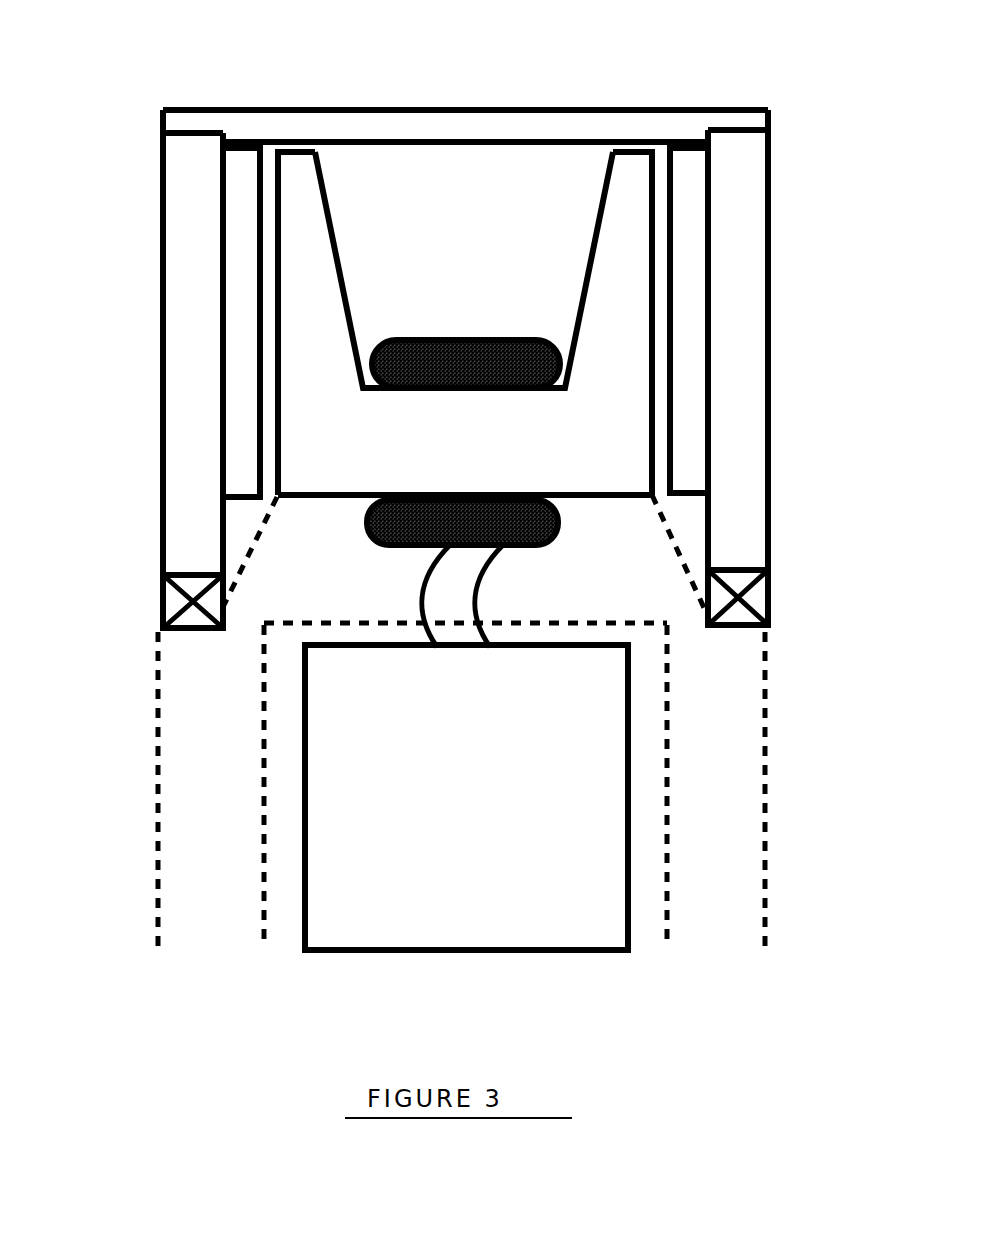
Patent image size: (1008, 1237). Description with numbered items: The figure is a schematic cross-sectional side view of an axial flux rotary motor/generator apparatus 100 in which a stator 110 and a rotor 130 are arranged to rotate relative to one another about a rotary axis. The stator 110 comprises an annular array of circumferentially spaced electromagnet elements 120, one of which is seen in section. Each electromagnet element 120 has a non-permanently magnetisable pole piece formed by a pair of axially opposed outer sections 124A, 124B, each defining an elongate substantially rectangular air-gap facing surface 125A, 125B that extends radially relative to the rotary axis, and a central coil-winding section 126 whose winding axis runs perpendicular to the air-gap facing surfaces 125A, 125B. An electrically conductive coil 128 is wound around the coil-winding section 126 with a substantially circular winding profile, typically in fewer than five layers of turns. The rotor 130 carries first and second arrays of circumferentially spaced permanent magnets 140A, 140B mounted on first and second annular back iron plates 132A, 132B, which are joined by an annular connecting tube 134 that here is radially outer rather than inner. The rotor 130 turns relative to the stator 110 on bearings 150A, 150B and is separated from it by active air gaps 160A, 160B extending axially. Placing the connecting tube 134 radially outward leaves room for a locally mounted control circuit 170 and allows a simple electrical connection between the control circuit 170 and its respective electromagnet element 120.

The axial flux rotary motor/generator apparatus 100 is at (760, 985).
The stator 110 is at (280, 512).
The electromagnet element 120 is at (342, 525).
The first axially opposed outer section 124A is at (342, 270).
The second axially opposed outer section 124B is at (592, 237).
The first air-gap facing surface 125A is at (278, 428).
The second air-gap facing surface 125B is at (652, 440).
The central coil-winding section 126 is at (525, 455).
The electrically conductive coil 128 is at (473, 340).
The rotor 130 is at (725, 310).
The first annular back iron plate 132A is at (163, 372).
The second annular back iron plate 132B is at (770, 365).
The annular connecting tube 134 is at (345, 108).
The first array of permanent magnets 140A is at (223, 227).
The second array of permanent magnets 140B is at (710, 193).
The first bearing 150A is at (180, 630).
The second bearing 150B is at (735, 627).
The first active air gap 160A is at (268, 135).
The second active air gap 160B is at (659, 137).
The locally mounted control circuit 170 is at (485, 815).